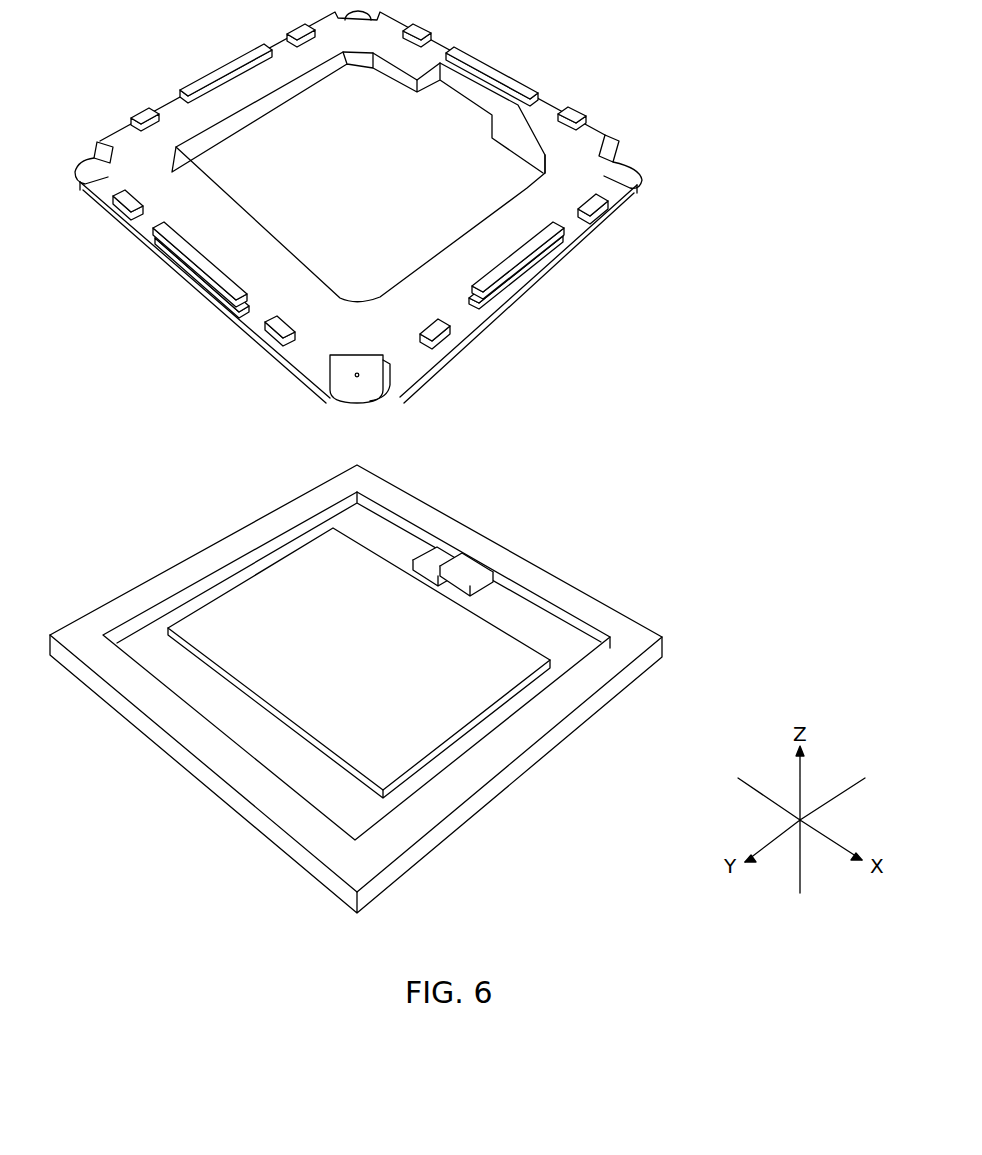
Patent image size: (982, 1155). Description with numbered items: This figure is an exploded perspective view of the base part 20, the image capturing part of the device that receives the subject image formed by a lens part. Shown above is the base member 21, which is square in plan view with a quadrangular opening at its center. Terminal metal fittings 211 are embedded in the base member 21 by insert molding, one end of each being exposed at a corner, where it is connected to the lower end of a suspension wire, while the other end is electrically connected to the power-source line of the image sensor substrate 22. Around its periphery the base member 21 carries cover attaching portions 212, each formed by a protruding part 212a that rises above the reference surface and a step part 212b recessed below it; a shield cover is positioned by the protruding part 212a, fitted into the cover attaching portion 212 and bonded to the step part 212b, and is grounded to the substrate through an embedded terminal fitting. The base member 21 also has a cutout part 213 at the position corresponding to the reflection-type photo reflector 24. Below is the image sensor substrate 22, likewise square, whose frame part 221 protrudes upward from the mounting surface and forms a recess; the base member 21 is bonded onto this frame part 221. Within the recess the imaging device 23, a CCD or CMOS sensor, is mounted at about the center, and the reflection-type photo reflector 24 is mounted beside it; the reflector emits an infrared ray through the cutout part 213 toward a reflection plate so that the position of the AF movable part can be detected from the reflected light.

The base part 20 is at (786, 228).
The base member 21 is at (398, 226).
The terminal metal fitting 211 is at (393, 381).
The cover attaching portion 212 is at (437, 276).
The protruding part 212a is at (517, 257).
The step part 212b is at (507, 297).
The cutout part 213 is at (488, 97).
The image sensor substrate 22 is at (382, 689).
The frame part 221 is at (412, 823).
The imaging device 23 is at (487, 687).
The reflection-type photo reflector 24 is at (473, 577).